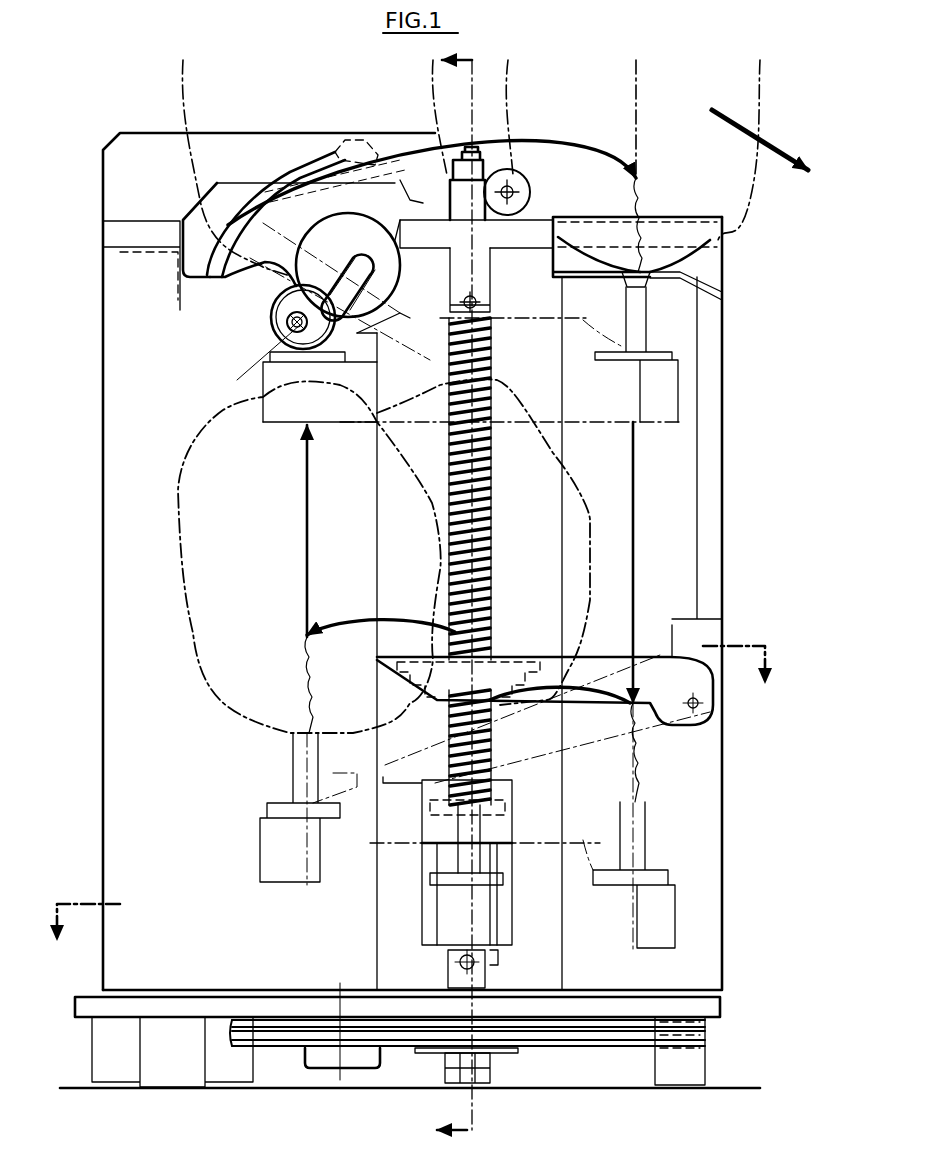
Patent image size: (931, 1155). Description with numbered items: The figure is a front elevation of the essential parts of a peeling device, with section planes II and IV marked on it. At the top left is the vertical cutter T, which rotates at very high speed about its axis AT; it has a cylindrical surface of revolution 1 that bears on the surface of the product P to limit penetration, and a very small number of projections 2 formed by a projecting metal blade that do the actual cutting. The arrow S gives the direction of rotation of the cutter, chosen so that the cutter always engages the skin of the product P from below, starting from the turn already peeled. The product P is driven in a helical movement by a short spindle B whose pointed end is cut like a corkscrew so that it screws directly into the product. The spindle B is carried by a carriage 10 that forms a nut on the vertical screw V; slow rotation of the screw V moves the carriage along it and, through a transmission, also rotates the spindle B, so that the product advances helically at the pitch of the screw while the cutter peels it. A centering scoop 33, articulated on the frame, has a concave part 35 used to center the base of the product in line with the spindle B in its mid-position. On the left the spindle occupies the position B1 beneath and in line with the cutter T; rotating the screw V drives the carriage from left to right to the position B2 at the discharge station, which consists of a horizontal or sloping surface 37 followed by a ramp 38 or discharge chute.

The surface of revolution 1 is at (352, 265).
The projections 2 is at (282, 292).
The arrow S is at (325, 307).
The vertical cutter T is at (283, 318).
The axis AT is at (252, 366).
The horizontal or sloping surface 37 is at (590, 274).
The ramp 38 is at (705, 291).
The product P is at (186, 472).
The vertical screw V is at (492, 500).
The concave part 35 is at (518, 652).
The centering scoop 33 is at (602, 668).
The position B1 is at (305, 751).
The position B2 is at (635, 822).
The spindle B is at (465, 828).
The carriage 10 is at (428, 918).
The section line II is at (466, 598).
The section line IV is at (407, 779).